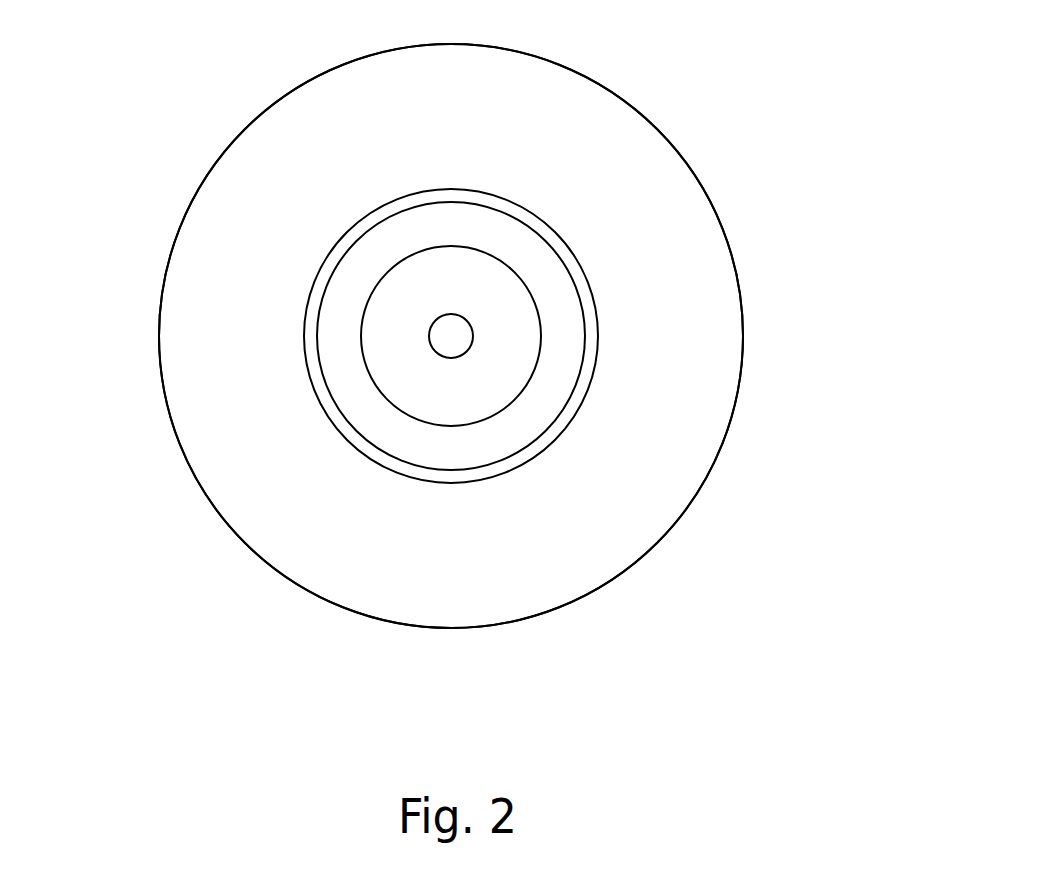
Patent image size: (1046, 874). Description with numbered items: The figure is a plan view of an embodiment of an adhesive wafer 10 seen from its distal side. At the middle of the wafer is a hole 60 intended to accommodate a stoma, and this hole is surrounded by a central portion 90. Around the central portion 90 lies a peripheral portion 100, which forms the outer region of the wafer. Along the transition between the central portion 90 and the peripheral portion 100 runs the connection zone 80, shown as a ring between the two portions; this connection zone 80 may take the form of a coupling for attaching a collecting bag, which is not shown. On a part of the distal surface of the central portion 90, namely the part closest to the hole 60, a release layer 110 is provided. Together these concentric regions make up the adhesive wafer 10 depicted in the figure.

The adhesive wafer 10 is at (682, 113).
The peripheral portion 100 is at (707, 295).
The connection zone 80 is at (523, 452).
The hole 60 is at (452, 337).
The release layer 110 is at (390, 332).
The central portion 90 is at (418, 397).